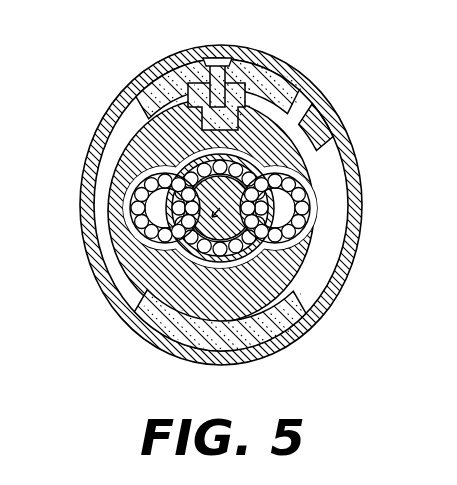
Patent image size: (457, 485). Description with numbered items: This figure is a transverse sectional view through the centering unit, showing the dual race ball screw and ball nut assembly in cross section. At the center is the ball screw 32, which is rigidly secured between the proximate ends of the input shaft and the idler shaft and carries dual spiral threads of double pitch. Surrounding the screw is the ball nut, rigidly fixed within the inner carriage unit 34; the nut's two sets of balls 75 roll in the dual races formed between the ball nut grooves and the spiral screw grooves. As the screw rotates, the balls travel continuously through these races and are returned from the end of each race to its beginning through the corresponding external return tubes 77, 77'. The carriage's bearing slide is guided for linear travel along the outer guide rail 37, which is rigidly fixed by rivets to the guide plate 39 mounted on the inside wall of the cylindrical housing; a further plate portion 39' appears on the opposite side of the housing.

The ball screw 32 is at (150, 265).
The inner carriage unit 34 is at (305, 132).
The guide rail 37 is at (205, 128).
The guide plate 39 is at (224, 201).
The lower arcuate segment 39' is at (230, 206).
The balls 75 is at (262, 173).
The external return tube 77 is at (328, 233).
The external return tube 77' is at (136, 157).